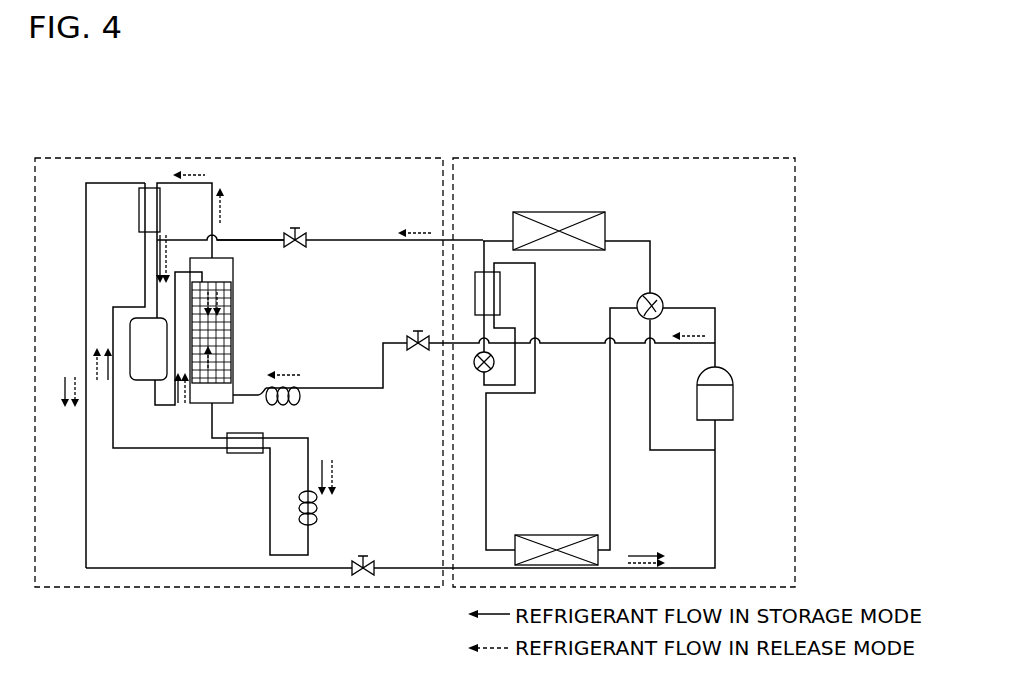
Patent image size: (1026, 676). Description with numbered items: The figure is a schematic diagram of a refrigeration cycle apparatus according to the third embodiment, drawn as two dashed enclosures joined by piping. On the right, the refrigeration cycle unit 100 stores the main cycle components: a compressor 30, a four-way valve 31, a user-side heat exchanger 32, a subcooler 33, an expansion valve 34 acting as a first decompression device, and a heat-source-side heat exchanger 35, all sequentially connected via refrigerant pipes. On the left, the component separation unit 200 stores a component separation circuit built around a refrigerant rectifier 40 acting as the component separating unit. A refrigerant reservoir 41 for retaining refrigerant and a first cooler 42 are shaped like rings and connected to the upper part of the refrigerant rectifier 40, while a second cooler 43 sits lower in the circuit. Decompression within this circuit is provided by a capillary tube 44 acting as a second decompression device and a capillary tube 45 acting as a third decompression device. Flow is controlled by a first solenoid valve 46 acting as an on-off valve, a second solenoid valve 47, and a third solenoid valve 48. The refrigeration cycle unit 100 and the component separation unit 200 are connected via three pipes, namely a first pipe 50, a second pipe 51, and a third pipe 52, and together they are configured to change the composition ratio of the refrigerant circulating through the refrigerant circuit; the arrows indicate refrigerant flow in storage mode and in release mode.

The compressor 30 is at (733, 398).
The four-way valve 31 is at (660, 297).
The user-side heat exchanger 32 is at (550, 212).
The subcooler 33 is at (475, 287).
The expansion valve 34 is at (490, 374).
The heat-source-side heat exchanger 35 is at (558, 535).
The refrigerant rectifier 40 is at (233, 320).
The refrigerant reservoir 41 is at (150, 381).
The first cooler 42 is at (139, 214).
The second cooler 43 is at (245, 433).
The capillary tube 44 is at (305, 388).
The capillary tube 45 is at (298, 512).
The first solenoid valve 46 is at (418, 333).
The second solenoid valve 47 is at (297, 229).
The third solenoid valve 48 is at (363, 556).
The first pipe 50 is at (575, 345).
The second pipe 51 is at (362, 240).
The third pipe 52 is at (405, 568).
The refrigeration cycle unit 100 is at (535, 158).
The component separation unit 200 is at (152, 158).